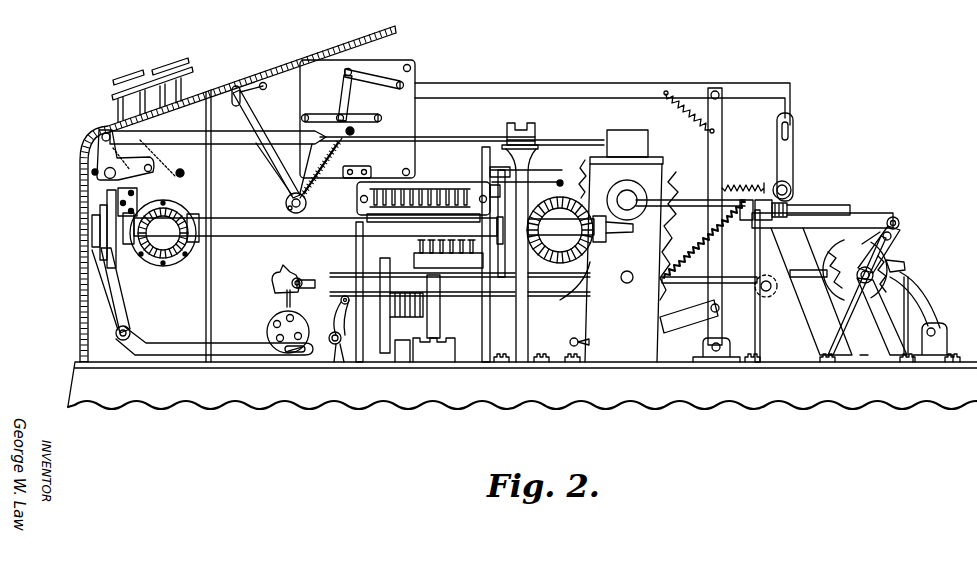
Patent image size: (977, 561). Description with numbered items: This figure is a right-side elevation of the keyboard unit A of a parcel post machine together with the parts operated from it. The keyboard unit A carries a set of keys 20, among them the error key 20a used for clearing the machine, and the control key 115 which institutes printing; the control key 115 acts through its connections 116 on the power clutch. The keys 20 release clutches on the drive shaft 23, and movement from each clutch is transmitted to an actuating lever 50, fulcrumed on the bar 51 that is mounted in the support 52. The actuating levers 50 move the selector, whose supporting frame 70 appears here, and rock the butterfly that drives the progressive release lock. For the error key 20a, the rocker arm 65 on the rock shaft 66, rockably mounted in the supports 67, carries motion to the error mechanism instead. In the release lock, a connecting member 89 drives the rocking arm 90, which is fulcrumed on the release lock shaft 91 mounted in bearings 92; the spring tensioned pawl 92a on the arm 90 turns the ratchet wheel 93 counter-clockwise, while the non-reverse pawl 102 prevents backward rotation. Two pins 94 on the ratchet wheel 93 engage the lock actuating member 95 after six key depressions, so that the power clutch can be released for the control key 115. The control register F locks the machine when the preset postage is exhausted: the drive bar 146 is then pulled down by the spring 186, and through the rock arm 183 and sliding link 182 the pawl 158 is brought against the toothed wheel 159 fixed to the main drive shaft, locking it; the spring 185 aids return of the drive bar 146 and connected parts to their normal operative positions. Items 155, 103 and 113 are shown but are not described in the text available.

The keyboard unit A is at (65, 149).
The keys 20 is at (153, 60).
The error key 20a is at (128, 76).
The control key 115 is at (112, 94).
The connections 116 is at (238, 131).
The link lever 155 is at (270, 91).
The control register F is at (409, 58).
The drive bar 146 is at (500, 98).
The spring 186 is at (700, 128).
The rock arm 183 is at (722, 150).
The toothed wheel 159 is at (673, 192).
The lock actuating member 95 is at (792, 196).
The connecting member 89 is at (857, 212).
The spring tensioned pawl 92a is at (877, 230).
The rocking arm 90 is at (900, 228).
The ratchet wheel 93 is at (898, 265).
The spring-tensioned pawl 102 is at (921, 312).
The release lock shaft 91 is at (866, 284).
The pins 94 is at (845, 290).
The bar 51 is at (762, 280).
The sliding link 182 is at (672, 320).
The spring 185 is at (585, 343).
The support 52 is at (791, 364).
The bearings 92 is at (869, 364).
The bracket 103 is at (926, 364).
The actuating lever 50 is at (548, 280).
The pawl 158 is at (586, 278).
The supporting frame 70 is at (356, 251).
The rocker arm 65 is at (340, 298).
The rock shaft 66 is at (333, 344).
The supports 67 is at (348, 348).
The drive shaft 23 is at (155, 262).
The shaft 113 is at (250, 230).